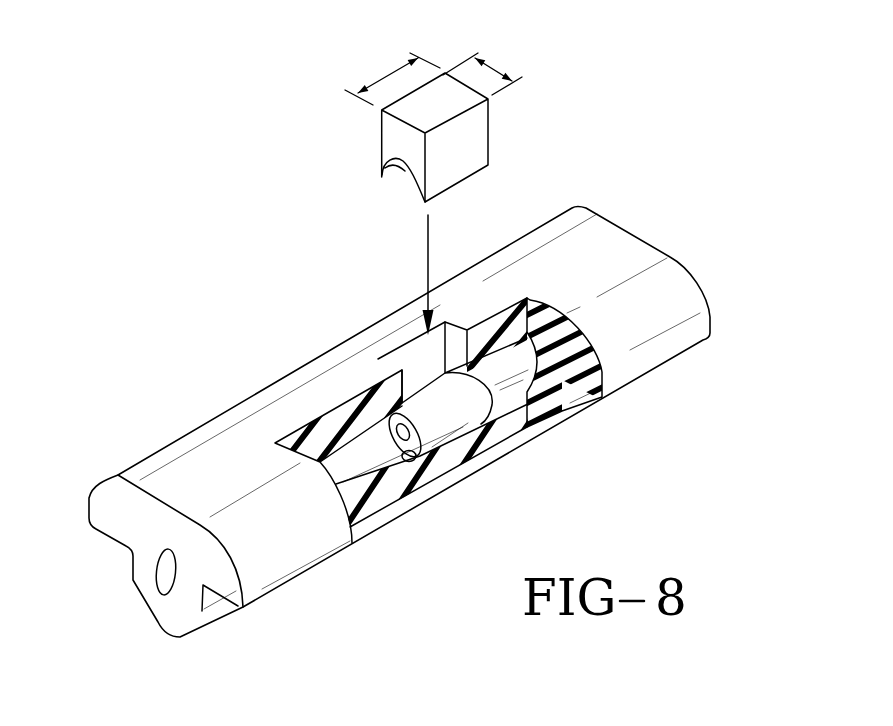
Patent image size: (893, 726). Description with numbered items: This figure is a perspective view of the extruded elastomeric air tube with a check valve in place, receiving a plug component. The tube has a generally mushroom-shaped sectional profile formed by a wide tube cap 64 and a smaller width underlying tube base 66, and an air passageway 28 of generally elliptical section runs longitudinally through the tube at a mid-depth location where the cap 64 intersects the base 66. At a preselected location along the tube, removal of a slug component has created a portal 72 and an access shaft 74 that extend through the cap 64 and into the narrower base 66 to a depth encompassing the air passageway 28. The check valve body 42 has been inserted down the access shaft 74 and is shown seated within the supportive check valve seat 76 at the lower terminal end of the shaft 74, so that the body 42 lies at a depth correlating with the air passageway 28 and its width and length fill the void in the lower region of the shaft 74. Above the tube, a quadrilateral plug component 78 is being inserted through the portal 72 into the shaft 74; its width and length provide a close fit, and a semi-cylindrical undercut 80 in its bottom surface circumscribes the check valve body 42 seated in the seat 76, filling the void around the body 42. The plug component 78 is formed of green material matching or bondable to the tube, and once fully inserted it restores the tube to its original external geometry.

The air passageway 28 is at (165, 570).
The check valve body 42 is at (456, 468).
The tube cap 64 is at (227, 452).
The tube base 66 is at (180, 612).
The portal 72 is at (396, 332).
The access shaft 74 is at (408, 358).
The check valve seat 76 is at (409, 462).
The plug component 78 is at (489, 128).
The semi-cylindrical undercut 80 is at (412, 173).